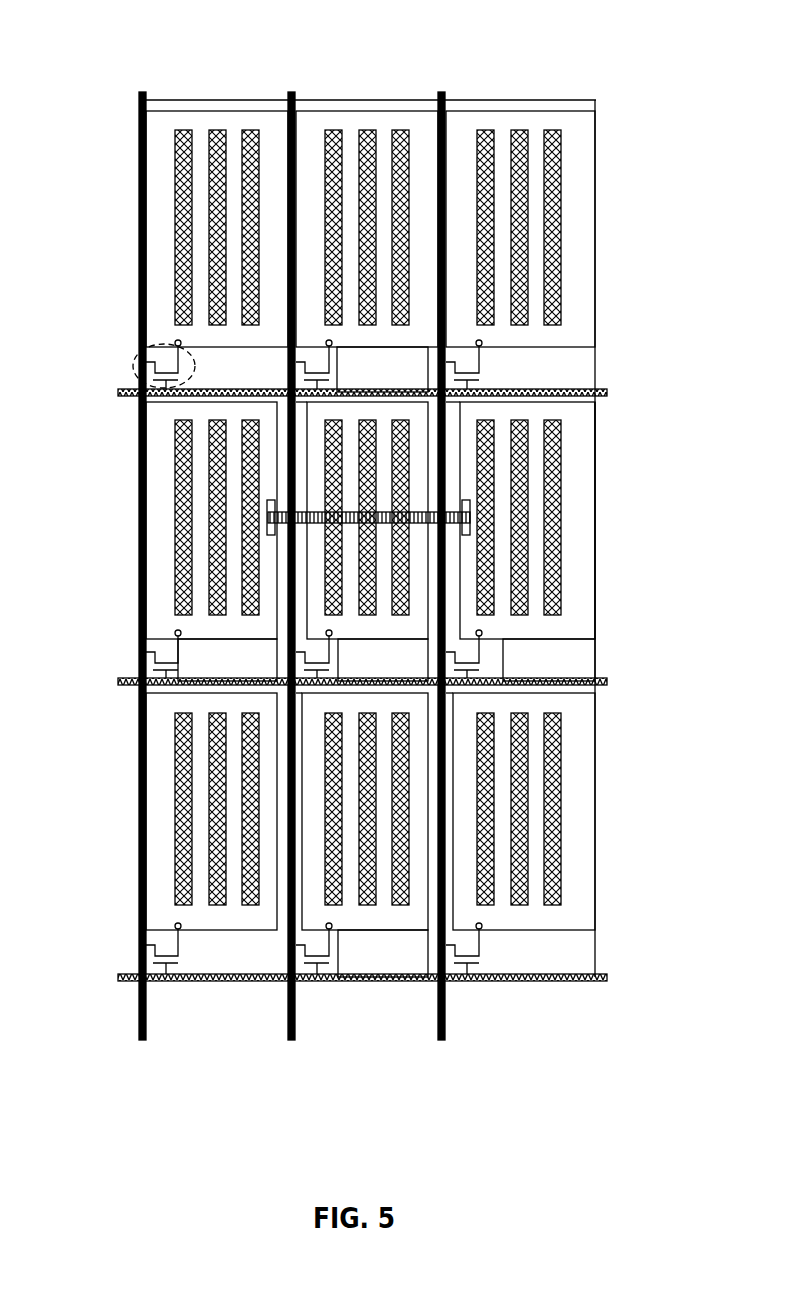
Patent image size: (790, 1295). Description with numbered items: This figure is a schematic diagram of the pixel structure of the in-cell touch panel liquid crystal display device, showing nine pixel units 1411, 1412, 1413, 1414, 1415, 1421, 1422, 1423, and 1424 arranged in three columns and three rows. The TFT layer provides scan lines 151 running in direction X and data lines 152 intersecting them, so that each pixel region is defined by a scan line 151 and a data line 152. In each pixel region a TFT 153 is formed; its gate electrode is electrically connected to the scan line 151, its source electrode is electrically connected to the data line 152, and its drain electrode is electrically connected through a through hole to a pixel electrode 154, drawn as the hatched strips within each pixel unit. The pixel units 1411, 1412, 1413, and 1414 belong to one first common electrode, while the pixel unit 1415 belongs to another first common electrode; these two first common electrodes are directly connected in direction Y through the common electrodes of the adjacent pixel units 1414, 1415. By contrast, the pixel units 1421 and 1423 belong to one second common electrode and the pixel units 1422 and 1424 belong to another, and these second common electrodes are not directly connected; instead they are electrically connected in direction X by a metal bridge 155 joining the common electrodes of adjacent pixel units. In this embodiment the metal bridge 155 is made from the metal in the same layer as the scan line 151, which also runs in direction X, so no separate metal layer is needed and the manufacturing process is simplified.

The scan line 151 is at (140, 397).
The data line 152 is at (140, 368).
The TFT 153 is at (140, 357).
The pixel electrode 154 is at (175, 231).
The metal bridge 155 is at (470, 518).
The pixel unit 1411 is at (216, 100).
The pixel unit 1412 is at (364, 100).
The pixel unit 1413 is at (520, 100).
The pixel unit 1414 is at (427, 413).
The pixel unit 1415 is at (347, 917).
The pixel unit 1421 is at (142, 515).
The pixel unit 1422 is at (595, 572).
The pixel unit 1423 is at (215, 930).
The pixel unit 1424 is at (522, 930).